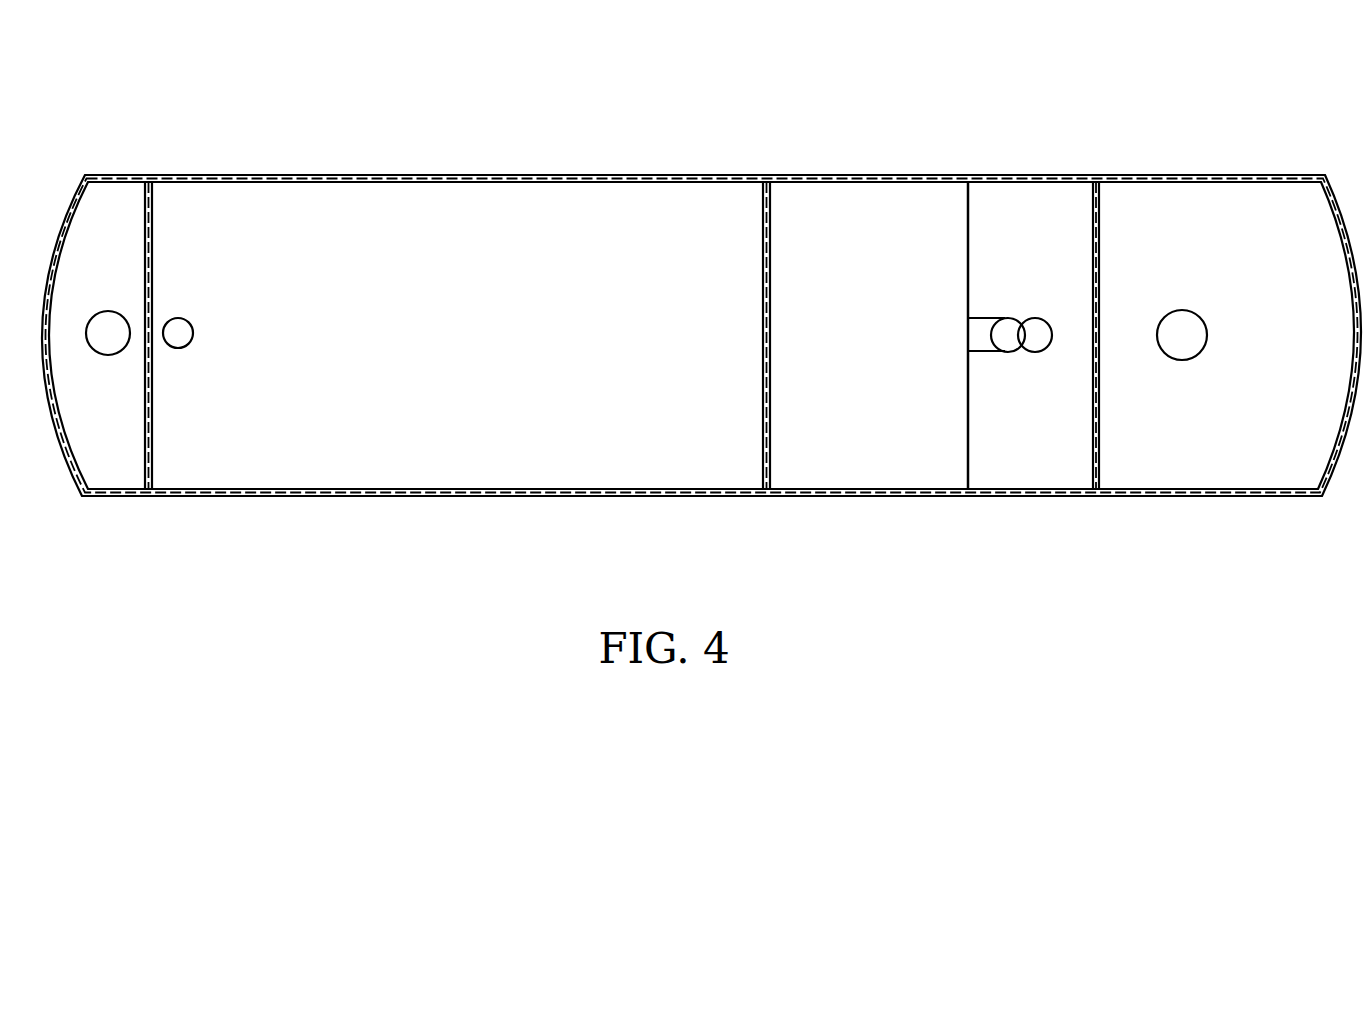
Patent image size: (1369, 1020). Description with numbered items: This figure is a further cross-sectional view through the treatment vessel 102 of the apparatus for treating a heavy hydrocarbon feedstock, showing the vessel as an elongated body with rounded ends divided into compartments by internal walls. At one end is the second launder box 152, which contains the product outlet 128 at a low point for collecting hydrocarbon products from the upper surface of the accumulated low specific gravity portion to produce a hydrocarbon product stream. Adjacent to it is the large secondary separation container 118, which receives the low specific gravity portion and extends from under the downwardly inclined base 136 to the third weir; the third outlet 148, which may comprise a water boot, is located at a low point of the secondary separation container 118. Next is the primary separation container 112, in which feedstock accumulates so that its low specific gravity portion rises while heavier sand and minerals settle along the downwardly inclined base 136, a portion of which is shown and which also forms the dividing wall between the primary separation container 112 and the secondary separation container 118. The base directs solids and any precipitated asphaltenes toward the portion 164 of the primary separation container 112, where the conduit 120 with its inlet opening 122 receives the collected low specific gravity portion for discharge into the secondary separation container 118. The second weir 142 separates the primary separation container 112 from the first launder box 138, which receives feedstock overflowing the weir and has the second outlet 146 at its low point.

The treatment vessel 102 is at (1052, 175).
The second launder box 152 is at (135, 251).
The secondary separation container 118 is at (488, 355).
The primary separation container 112 is at (845, 353).
The portion of the primary separation container 164 is at (1008, 253).
The first launder box 138 is at (1177, 253).
The second weir 142 is at (1096, 497).
The product outlet 128 is at (108, 356).
The third outlet 148 is at (178, 349).
The conduit 120 is at (1003, 353).
The inlet opening 122 is at (1040, 353).
The second outlet 146 is at (1182, 361).
The downwardly inclined base 136 is at (877, 450).